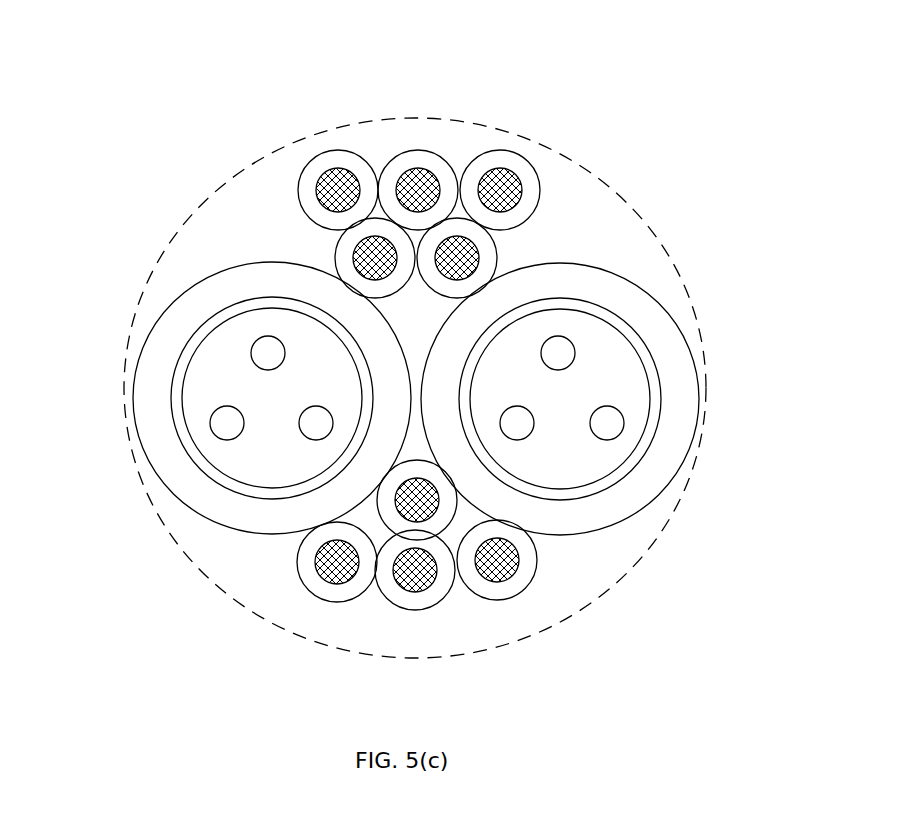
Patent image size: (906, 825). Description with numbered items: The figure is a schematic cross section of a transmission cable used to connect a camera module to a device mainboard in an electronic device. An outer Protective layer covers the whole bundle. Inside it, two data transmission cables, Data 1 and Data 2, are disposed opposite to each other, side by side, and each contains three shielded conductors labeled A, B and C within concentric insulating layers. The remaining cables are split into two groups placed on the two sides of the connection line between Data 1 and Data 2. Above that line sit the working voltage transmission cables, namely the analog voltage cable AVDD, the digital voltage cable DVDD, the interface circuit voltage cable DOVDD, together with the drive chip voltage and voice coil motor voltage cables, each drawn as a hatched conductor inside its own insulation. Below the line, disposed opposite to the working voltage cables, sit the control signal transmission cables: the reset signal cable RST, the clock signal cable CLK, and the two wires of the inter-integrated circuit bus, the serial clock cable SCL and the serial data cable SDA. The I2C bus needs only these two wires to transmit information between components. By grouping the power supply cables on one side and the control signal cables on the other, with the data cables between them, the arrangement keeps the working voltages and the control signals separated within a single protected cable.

The protective layer Protective layer is at (198, 205).
The data transmission cable Data 1 is at (206, 381).
The data transmission cable Data 2 is at (615, 360).
The analog voltage transmission cable AVDD is at (333, 180).
The digital voltage transmission cable DVDD is at (374, 250).
The interface circuit voltage transmission cable DOVDD is at (417, 175).
The reset signal transmission cable RST is at (400, 517).
The clock signal transmission cable CLK is at (328, 578).
The serial clock transmission cable SCL is at (420, 575).
The serial data transmission cable SDA is at (503, 573).